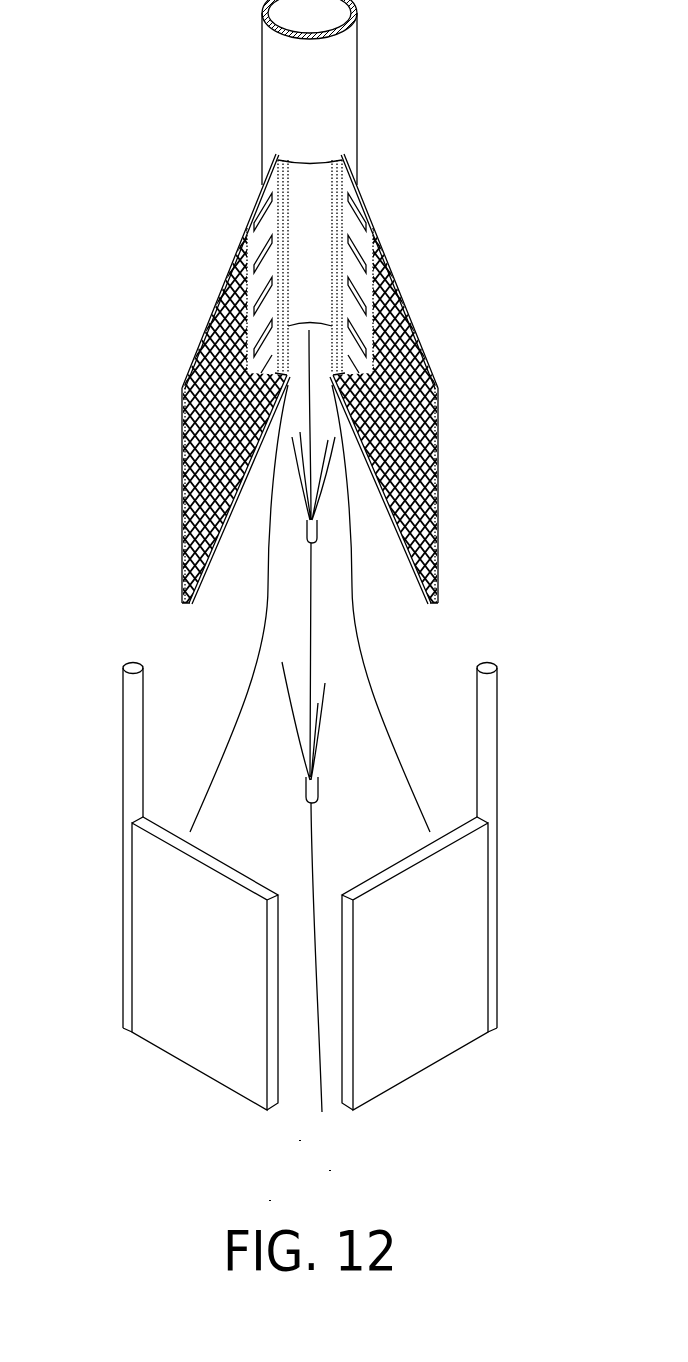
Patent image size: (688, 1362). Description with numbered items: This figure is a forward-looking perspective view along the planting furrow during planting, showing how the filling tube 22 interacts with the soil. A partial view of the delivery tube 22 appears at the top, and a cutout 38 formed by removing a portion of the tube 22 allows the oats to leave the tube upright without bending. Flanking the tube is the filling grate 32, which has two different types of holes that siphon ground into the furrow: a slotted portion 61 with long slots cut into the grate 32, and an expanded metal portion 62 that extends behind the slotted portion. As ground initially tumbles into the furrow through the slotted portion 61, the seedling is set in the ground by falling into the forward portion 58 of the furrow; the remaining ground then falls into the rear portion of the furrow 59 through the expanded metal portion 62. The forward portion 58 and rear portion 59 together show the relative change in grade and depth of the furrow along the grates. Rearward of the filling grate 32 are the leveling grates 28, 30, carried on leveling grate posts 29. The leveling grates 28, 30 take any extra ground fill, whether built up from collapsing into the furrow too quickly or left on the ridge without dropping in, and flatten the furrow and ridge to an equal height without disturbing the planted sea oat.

The filling tube 22 is at (248, 57).
The cutout 38 is at (307, 192).
The filling grate 32 is at (168, 469).
The slotted portion 61 is at (267, 265).
The expanded metal portion 62 is at (228, 312).
The forward portion of the furrow 58 is at (340, 636).
The leveling grate post 29 is at (122, 705).
The leveling grate 28 is at (306, 963).
The leveling grate 30 is at (197, 1037).
The rear portion of the furrow 59 is at (277, 1155).